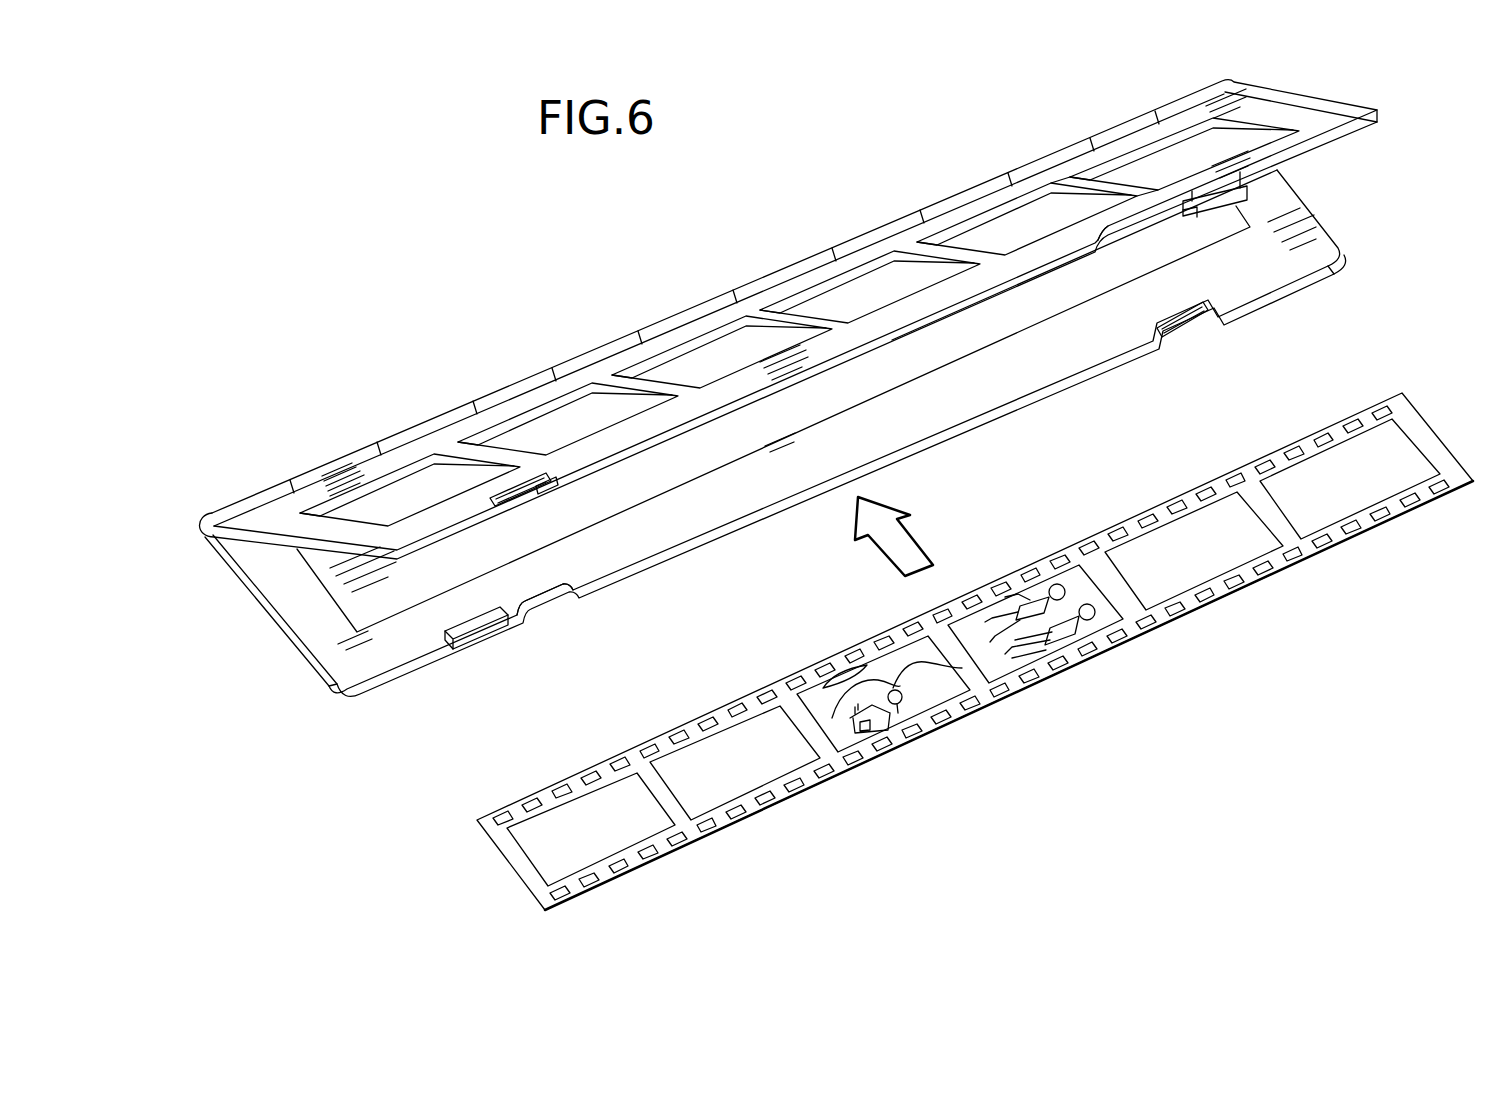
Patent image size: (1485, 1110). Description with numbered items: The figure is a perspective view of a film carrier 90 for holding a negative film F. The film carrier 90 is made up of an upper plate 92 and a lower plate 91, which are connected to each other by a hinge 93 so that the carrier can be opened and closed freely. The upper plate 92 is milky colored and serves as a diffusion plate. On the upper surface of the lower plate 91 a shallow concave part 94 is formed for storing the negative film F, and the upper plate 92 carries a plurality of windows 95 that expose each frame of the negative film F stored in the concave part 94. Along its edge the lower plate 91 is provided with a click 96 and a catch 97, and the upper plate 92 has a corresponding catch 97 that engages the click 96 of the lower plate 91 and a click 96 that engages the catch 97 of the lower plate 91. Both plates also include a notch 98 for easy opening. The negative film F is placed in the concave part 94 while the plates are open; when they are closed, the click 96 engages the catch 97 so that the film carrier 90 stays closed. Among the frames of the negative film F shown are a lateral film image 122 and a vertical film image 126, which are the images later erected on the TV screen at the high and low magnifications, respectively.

The film carrier 90 is at (1338, 213).
The lower plate 91 is at (1294, 268).
The upper plate 92 is at (1340, 116).
The hinge 93 is at (1130, 120).
The concave part 94 is at (1068, 306).
The windows 95 is at (1097, 170).
The click 96 is at (1183, 316).
The catch 97 is at (1183, 214).
The notch 98 is at (1157, 207).
The lateral film image 122 is at (880, 663).
The vertical film image 126 is at (1045, 575).
The negative film F is at (933, 727).